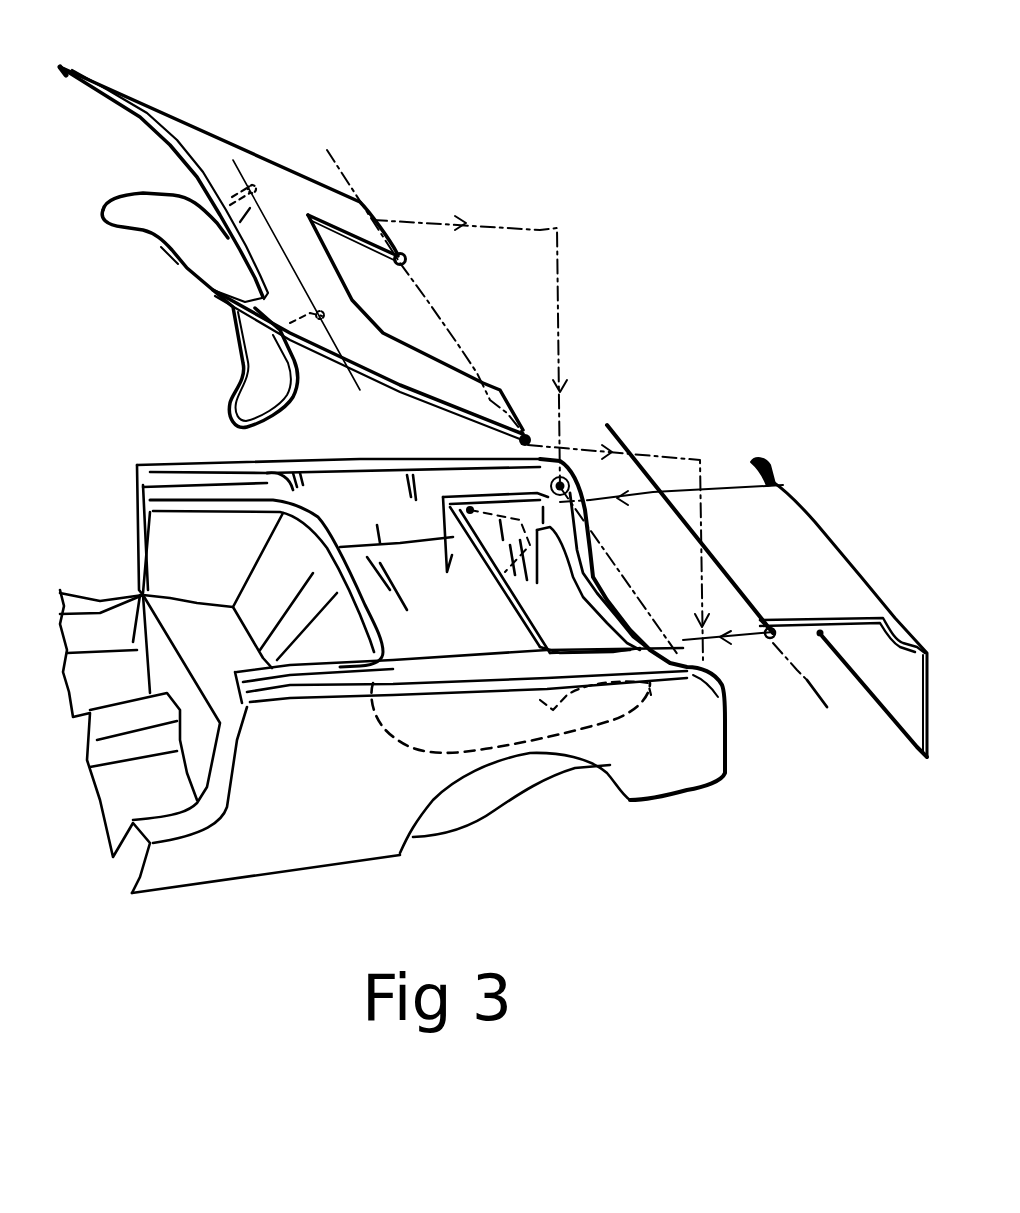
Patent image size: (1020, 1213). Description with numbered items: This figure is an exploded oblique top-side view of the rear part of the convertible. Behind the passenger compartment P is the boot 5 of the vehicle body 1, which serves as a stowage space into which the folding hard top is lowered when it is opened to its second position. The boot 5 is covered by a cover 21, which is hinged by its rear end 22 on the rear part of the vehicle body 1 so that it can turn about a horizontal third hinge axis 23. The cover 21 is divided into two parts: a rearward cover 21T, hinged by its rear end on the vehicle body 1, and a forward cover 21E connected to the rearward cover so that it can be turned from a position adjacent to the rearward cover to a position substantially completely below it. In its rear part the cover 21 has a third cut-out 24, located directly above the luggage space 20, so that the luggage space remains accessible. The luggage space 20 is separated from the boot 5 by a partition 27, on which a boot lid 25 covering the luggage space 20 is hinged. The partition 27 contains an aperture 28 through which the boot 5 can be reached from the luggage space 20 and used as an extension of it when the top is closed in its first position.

The vehicle body 1 is at (312, 820).
The boot 5 is at (446, 660).
The luggage space 20 is at (527, 562).
The cover 21 is at (197, 157).
The rearward cover 21T is at (280, 190).
The forward cover 21E is at (154, 207).
The rear end 22 is at (379, 192).
The third hinge axis 23 is at (336, 168).
The third cut-out 24 is at (383, 303).
The boot lid 25 is at (777, 520).
The partition 27 is at (558, 640).
The aperture 28 is at (482, 590).
The passenger compartment P is at (140, 593).